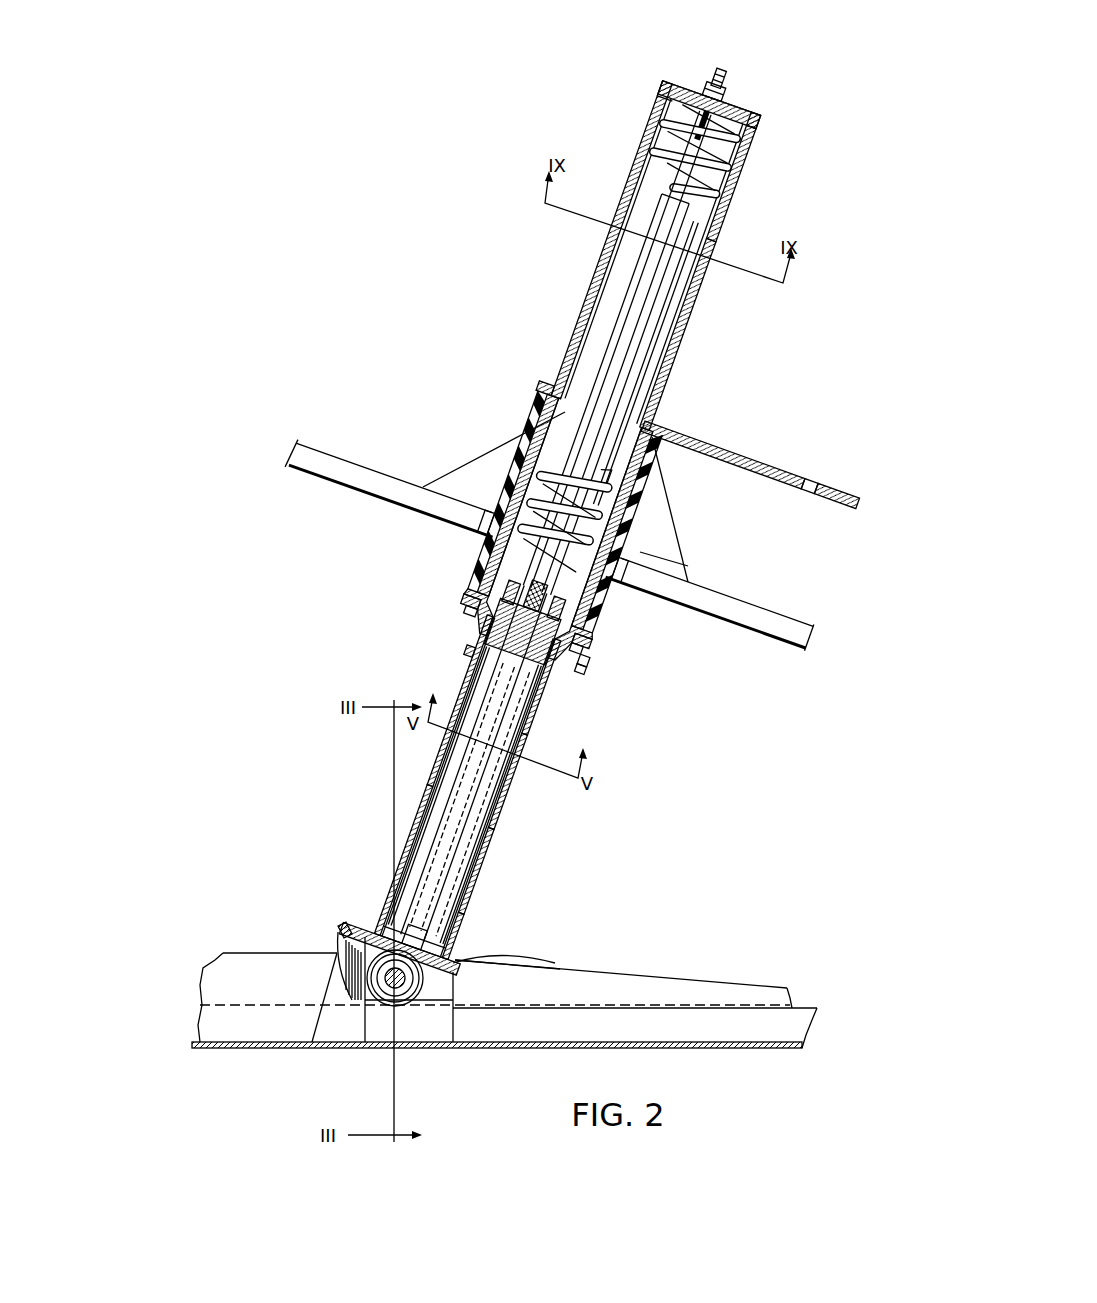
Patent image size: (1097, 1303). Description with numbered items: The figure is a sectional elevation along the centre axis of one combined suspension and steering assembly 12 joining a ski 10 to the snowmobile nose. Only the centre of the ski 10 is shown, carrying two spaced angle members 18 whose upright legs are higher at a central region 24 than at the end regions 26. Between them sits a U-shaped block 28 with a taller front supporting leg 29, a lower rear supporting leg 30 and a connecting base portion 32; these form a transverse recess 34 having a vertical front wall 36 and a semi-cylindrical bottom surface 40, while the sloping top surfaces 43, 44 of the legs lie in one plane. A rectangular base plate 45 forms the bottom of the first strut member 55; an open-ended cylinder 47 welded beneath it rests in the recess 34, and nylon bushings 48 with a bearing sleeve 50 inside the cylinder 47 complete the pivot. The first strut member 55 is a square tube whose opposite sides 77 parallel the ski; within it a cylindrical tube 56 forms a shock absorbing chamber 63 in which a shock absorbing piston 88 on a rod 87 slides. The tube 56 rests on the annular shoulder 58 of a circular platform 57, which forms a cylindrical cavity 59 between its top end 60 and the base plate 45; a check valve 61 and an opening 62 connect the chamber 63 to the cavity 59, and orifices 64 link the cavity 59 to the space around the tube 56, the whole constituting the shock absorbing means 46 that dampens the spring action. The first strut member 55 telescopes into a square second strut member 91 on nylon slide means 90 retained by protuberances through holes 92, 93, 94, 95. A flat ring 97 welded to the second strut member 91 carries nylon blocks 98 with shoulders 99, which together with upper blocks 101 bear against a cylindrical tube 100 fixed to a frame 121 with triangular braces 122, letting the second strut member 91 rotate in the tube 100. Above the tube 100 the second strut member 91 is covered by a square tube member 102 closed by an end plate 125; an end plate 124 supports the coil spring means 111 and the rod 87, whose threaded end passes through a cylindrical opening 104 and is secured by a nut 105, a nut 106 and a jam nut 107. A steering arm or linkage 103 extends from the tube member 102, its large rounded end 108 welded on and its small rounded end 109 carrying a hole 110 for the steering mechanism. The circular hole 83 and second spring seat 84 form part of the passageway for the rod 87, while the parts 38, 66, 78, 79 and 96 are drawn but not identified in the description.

The ski 10 is at (810, 1005).
The combined suspension and steering assembly 12 is at (645, 475).
The angle member 18 is at (700, 975).
The central region 24 is at (268, 960).
The end region 26 is at (205, 960).
The block 28 is at (455, 1030).
The front supporting leg 29 is at (330, 985).
The rear supporting leg 30 is at (455, 1005).
The base portion 32 is at (401, 1031).
The recess 34 is at (380, 930).
The front wall 36 is at (345, 955).
The bracket face 38 is at (455, 985).
The bottom surface 40 is at (400, 1005).
The top surface 43 is at (345, 930).
The top surface 44 is at (500, 955).
The base plate 45 is at (540, 960).
The shock absorbing means 46 is at (445, 810).
The open-ended cylinder 47 is at (345, 1042).
The nylon bushing 48 is at (420, 1010).
The bearing sleeve 50 is at (385, 1000).
The first strut member 55 is at (470, 760).
The cylindrical tube 56 is at (480, 790).
The circular platform 57 is at (465, 890).
The annular shoulder 58 is at (455, 920).
The cylindrical cavity 59 is at (400, 865).
The top end 60 is at (480, 835).
The valve 61 is at (470, 860).
The opening 62 is at (420, 860).
The shock absorbing chamber 63 is at (440, 775).
The orifice 64 is at (440, 945).
The sleeve seal 66 is at (600, 615).
The side 77 is at (505, 800).
The piston rod tube 78 is at (560, 460).
The central rod 79 is at (575, 350).
The circular hole 83 is at (450, 462).
The second spring seat 84 is at (623, 573).
The rod 87 is at (735, 202).
The shock absorbing piston 88 is at (545, 695).
The slide means 90 is at (540, 405).
The second strut member 91 is at (690, 305).
The hole 92 is at (540, 495).
The hole 93 is at (500, 632).
The hole 94 is at (660, 560).
The hole 95 is at (598, 655).
The flange 96 is at (510, 512).
The flat ring 97 is at (590, 650).
The nylon block 98 is at (478, 575).
The shoulder 99 is at (470, 610).
The cylindrical metal tube 100 is at (548, 418).
The block 101 is at (548, 432).
The square tube member 102 is at (680, 175).
The steering arm or linkage 103 is at (800, 470).
The cylindrical opening 104 is at (750, 106).
The nut 105 is at (656, 115).
The nut 106 is at (736, 80).
The jam nut 107 is at (730, 70).
The large rounded end 108 is at (535, 383).
The small rounded end 109 is at (845, 495).
The cylindrical hole 110 is at (830, 480).
The coil spring means 111 is at (760, 150).
The rigid plate or frame 121 is at (785, 630).
The brace 122 is at (690, 555).
The end plate 124 is at (663, 88).
The end plate 125 is at (698, 86).